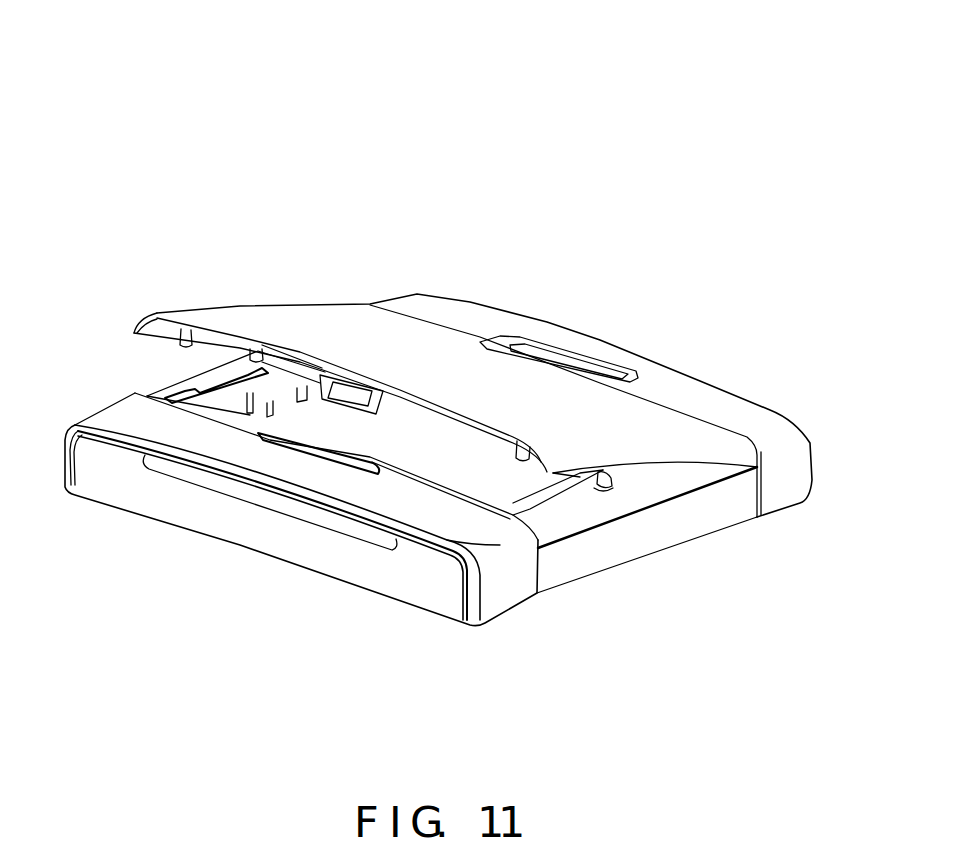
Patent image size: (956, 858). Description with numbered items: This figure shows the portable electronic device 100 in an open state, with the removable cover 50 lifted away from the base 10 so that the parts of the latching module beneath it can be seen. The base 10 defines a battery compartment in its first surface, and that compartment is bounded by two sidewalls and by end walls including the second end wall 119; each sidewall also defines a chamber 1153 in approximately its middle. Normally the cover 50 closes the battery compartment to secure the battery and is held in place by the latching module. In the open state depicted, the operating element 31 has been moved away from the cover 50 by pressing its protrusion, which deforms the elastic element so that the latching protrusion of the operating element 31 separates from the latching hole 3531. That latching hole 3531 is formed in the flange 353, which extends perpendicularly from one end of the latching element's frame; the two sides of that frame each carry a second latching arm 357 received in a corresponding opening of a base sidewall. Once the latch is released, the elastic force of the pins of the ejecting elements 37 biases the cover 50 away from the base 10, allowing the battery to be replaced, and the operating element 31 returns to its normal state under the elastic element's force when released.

The portable electronic device 100 is at (378, 55).
The base 10 is at (762, 424).
The removable cover 50 is at (635, 423).
The operating element 31 is at (362, 468).
The flange 353 is at (338, 395).
The latching hole 3531 is at (345, 383).
The second latching arm 357 is at (517, 442).
The ejecting element 37 is at (612, 480).
The chamber 1153 is at (607, 487).
The second end wall 119 is at (477, 533).